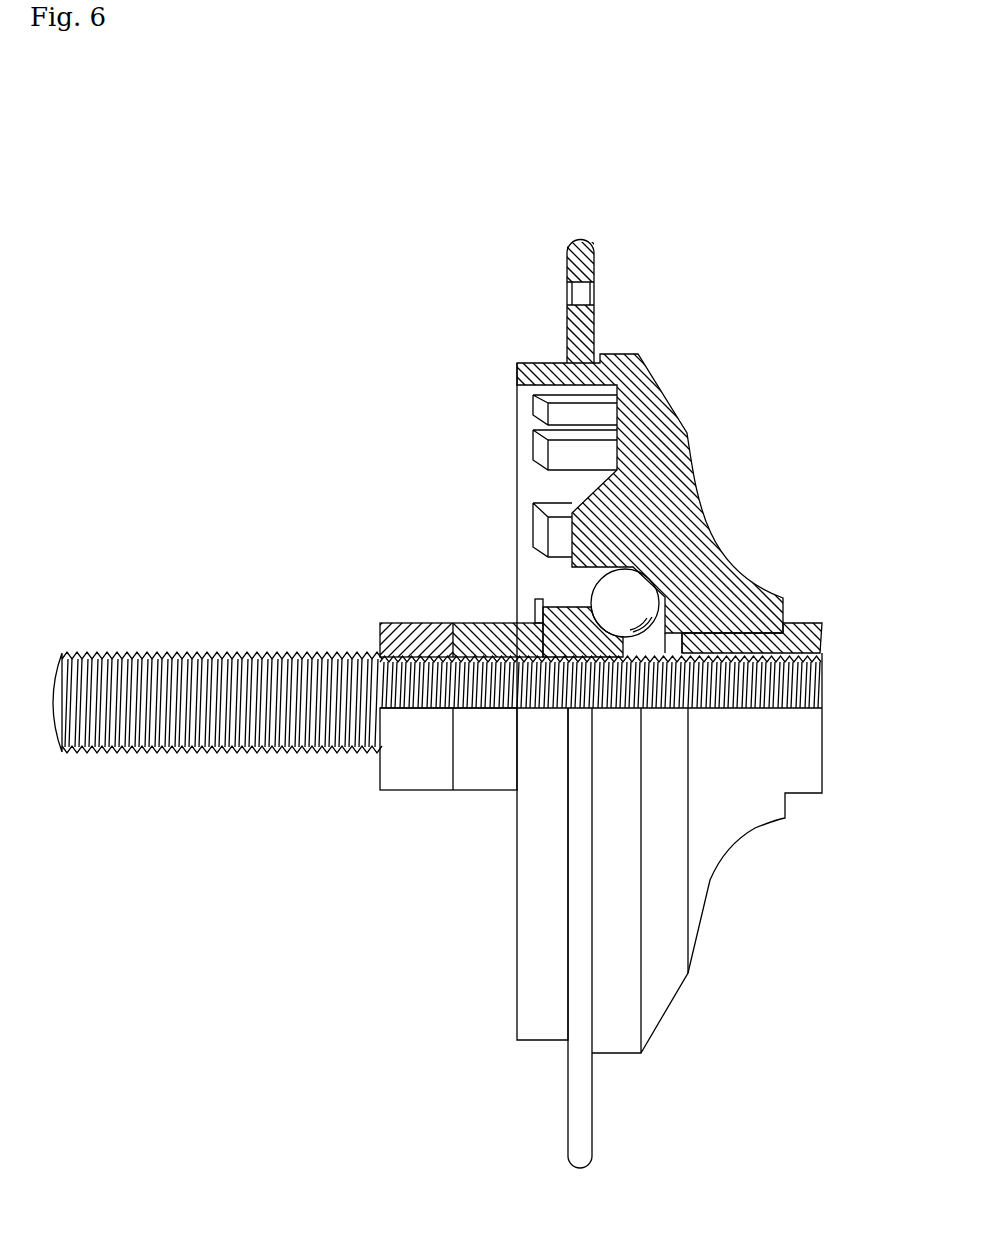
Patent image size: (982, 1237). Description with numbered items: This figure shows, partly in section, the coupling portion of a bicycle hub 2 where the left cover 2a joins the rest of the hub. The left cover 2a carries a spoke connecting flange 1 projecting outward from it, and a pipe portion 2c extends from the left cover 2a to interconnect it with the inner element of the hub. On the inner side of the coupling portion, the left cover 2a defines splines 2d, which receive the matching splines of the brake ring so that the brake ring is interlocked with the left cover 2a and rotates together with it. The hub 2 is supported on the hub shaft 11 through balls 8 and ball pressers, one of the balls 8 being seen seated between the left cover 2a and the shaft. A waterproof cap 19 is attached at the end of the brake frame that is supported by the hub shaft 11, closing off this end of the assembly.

The spoke connecting flange 1 is at (597, 253).
The bicycle hub 2 is at (714, 893).
The left cover 2a is at (643, 377).
The pipe portion 2c is at (801, 622).
The splines 2d is at (518, 422).
The balls 8 is at (643, 590).
The hub shaft 11 is at (210, 652).
The waterproof cap 19 is at (472, 623).